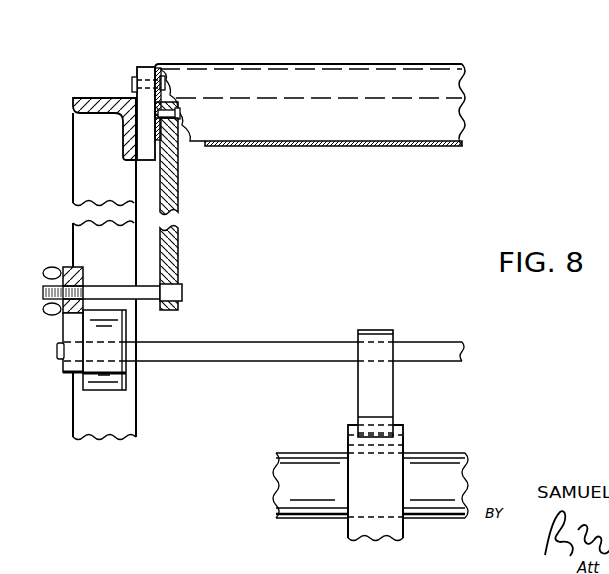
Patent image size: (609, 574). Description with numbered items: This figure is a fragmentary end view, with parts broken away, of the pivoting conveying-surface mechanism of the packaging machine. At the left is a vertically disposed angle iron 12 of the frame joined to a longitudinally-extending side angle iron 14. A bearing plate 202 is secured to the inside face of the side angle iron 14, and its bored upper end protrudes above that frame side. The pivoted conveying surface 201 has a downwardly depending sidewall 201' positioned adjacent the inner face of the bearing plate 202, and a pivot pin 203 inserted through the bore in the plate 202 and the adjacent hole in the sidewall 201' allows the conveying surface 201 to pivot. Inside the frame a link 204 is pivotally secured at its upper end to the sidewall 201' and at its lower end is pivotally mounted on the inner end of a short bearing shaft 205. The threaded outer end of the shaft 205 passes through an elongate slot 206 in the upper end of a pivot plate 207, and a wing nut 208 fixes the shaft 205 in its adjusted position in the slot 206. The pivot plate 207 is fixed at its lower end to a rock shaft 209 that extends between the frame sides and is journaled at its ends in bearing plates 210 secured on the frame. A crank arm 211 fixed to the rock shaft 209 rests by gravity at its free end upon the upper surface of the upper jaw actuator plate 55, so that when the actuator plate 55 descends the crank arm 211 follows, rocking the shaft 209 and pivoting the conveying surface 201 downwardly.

The vertically disposed angle iron 12 is at (73, 175).
The longitudinally-extending side angle iron 14 is at (82, 98).
The actuator plate 55 is at (405, 434).
The conveying surface 201 is at (310, 87).
The sidewall 201' is at (191, 136).
The bearing plate 202 is at (144, 67).
The pivot pin 203 is at (133, 83).
The link 204 is at (180, 194).
The bearing shaft 205 is at (139, 299).
The elongate slot 206 is at (83, 270).
The pivot plate 207 is at (66, 328).
The wing nut 208 is at (55, 268).
The rock shaft 209 is at (57, 350).
The bearing plate 210 is at (126, 380).
The crank arm 211 is at (395, 390).